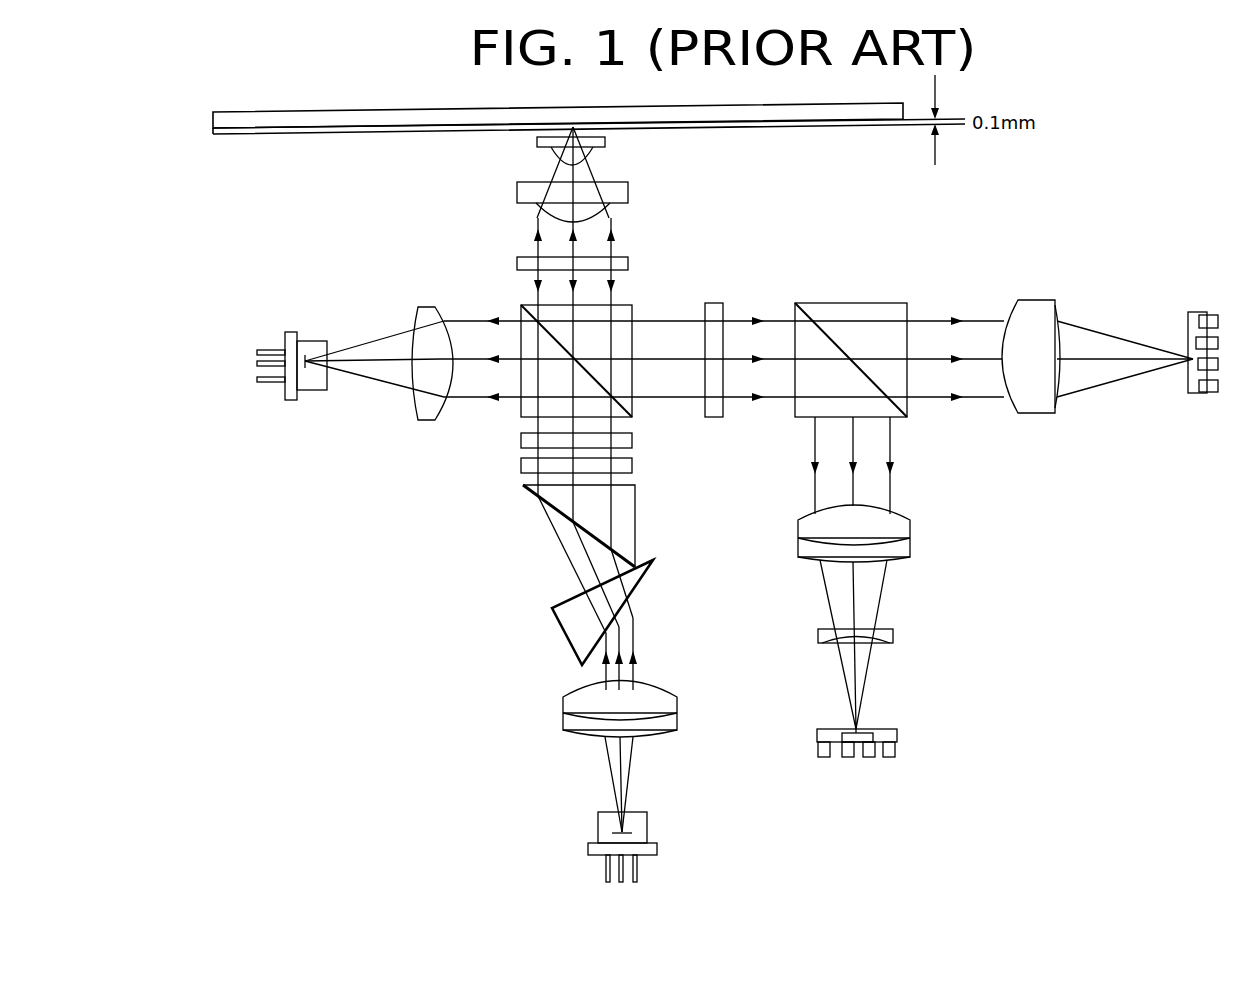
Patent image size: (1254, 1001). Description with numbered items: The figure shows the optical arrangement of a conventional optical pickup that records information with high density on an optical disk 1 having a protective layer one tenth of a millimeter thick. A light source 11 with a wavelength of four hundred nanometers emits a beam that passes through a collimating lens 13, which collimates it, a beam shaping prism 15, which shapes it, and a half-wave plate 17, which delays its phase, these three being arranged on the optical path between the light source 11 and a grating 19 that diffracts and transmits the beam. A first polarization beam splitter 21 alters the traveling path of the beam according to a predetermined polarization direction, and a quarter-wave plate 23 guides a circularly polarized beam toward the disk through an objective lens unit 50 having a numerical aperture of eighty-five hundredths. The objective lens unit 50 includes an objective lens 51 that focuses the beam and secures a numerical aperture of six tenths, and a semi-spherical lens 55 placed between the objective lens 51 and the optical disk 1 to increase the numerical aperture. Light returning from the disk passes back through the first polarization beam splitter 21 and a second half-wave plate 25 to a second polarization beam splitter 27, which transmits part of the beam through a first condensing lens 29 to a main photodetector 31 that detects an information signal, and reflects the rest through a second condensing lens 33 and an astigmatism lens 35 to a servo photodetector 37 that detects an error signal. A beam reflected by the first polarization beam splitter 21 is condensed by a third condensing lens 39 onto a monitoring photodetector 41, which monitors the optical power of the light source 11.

The optical disk 1 is at (200, 113).
The light source 11 is at (647, 825).
The collimating lens 13 is at (677, 703).
The beam shaping prism 15 is at (663, 515).
The λ/2 plate 17 is at (632, 466).
The grating 19 is at (632, 440).
The first polarization beam splitter 21 is at (632, 312).
The λ/4 plate 23 is at (628, 262).
The second λ/2 plate 25 is at (722, 310).
The second polarization beam splitter 27 is at (852, 303).
The first condensing lens 29 is at (1036, 300).
The main photodetector 31 is at (1195, 312).
The second condensing lens 33 is at (910, 538).
The astigmatism lens 35 is at (893, 637).
The servo photodetector 37 is at (897, 737).
The third condensing lens 39 is at (428, 420).
The monitoring photodetector 41 is at (292, 400).
The objective lens unit 50 is at (708, 146).
The objective lens 51 is at (628, 192).
The semi-spherical lens 55 is at (605, 142).